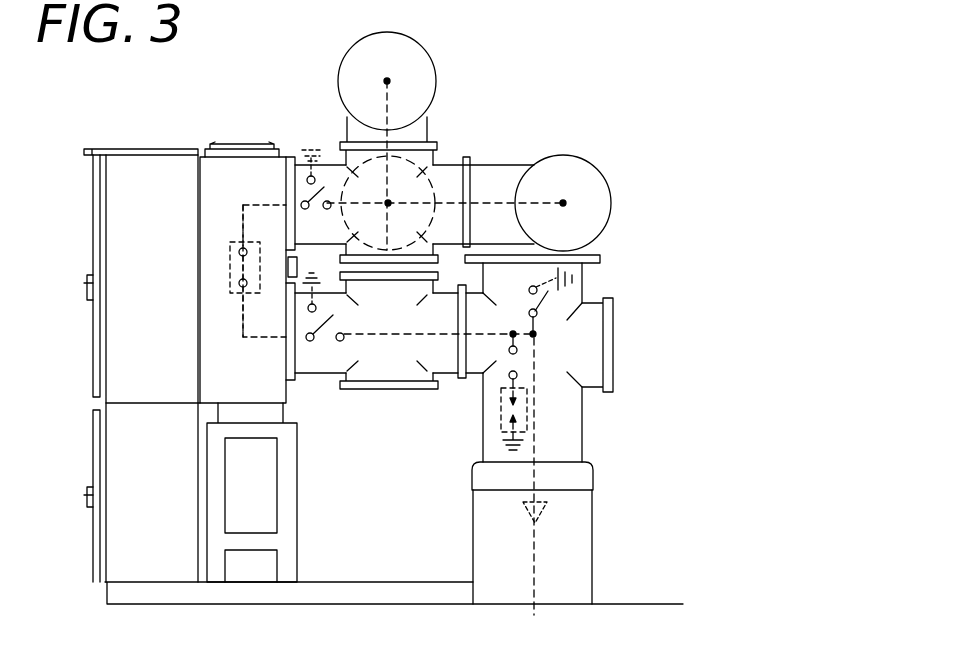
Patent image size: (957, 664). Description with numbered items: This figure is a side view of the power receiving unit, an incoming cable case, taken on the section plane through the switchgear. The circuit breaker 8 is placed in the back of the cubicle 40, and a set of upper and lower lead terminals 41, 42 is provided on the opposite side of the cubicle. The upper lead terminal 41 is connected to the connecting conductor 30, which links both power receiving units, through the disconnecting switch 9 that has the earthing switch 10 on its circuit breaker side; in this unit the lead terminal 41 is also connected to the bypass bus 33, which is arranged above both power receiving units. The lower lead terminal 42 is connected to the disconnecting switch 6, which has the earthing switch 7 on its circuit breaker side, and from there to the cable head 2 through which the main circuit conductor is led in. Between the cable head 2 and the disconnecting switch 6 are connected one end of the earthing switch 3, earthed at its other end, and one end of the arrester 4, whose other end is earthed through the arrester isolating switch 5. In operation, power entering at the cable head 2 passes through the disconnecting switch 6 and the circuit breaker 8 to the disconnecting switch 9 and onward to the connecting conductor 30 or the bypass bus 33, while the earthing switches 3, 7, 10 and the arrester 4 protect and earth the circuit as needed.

The cable head 2 is at (545, 513).
The earthing switch 3 is at (548, 298).
The arrester 4 is at (498, 413).
The arrester isolating switch 5 is at (510, 353).
The disconnecting switch 6 is at (335, 318).
The earthing switch 7 is at (388, 165).
The circuit breaker 8 is at (228, 265).
The disconnecting switch 9 is at (293, 183).
The earthing switch 10 is at (305, 152).
The connecting conductor 30 is at (563, 203).
The bypass bus 33 is at (387, 81).
The cubicle 40 is at (143, 149).
The lead terminal 41 is at (332, 165).
The lead terminal 42 is at (332, 374).